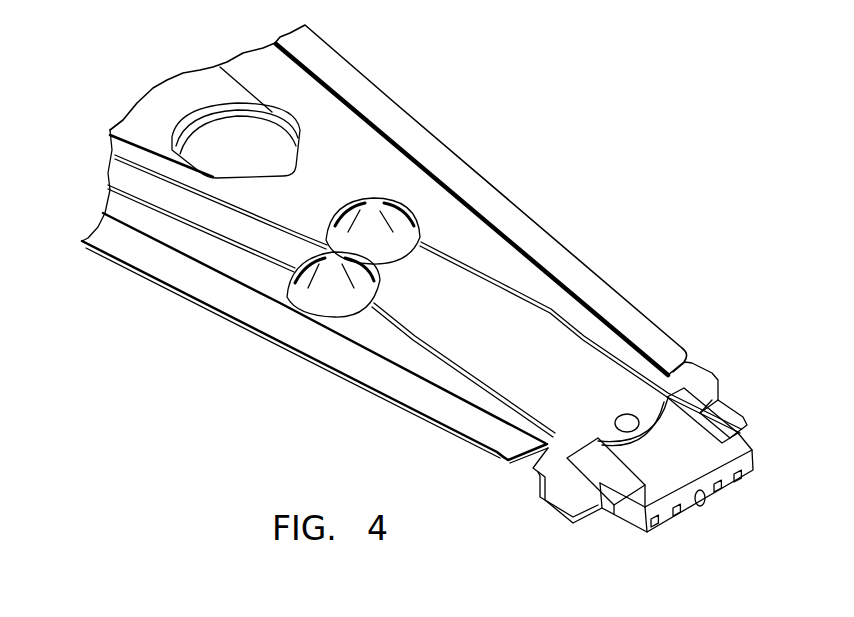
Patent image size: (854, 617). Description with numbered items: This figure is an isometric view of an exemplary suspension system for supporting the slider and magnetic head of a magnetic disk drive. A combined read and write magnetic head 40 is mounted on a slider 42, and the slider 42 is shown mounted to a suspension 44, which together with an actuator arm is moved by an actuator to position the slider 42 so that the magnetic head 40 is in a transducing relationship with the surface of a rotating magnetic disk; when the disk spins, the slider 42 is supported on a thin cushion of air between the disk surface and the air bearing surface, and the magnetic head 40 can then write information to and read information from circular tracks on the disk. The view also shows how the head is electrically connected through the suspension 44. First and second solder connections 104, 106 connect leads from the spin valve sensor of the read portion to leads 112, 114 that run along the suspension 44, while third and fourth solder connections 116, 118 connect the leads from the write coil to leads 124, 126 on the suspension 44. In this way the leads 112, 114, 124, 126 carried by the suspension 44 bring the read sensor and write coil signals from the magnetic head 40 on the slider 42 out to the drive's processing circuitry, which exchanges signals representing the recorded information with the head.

The magnetic head 40 is at (707, 515).
The slider 42 is at (592, 532).
The suspension 44 is at (535, 204).
The first solder connection 104 is at (647, 535).
The second solder connection 106 is at (748, 465).
The lead 112 is at (413, 340).
The lead 114 is at (583, 332).
The third solder connection 116 is at (680, 508).
The fourth solder connection 118 is at (727, 484).
The lead 124 is at (430, 340).
The lead 126 is at (500, 287).